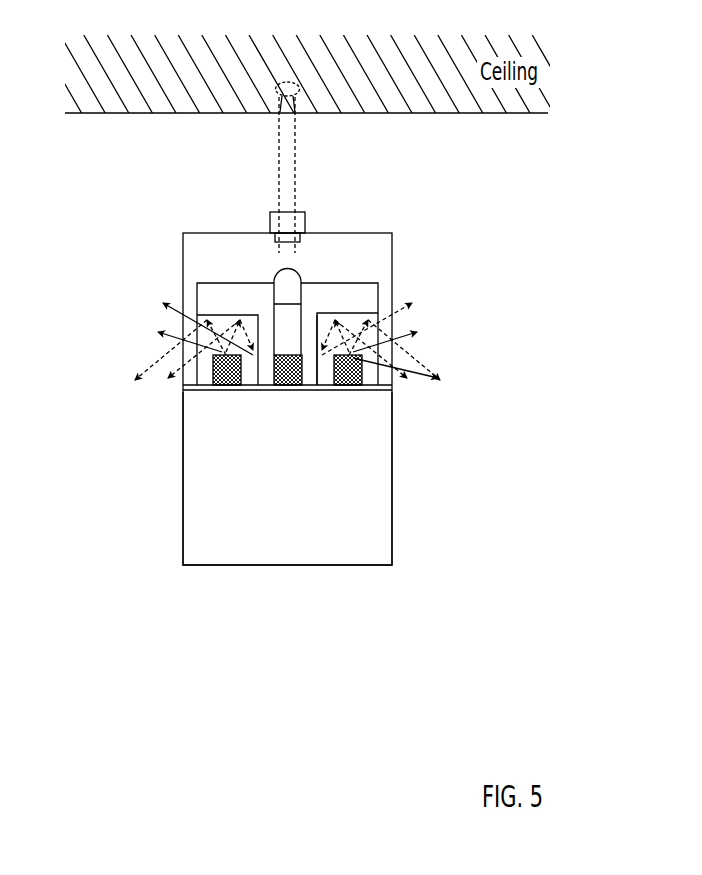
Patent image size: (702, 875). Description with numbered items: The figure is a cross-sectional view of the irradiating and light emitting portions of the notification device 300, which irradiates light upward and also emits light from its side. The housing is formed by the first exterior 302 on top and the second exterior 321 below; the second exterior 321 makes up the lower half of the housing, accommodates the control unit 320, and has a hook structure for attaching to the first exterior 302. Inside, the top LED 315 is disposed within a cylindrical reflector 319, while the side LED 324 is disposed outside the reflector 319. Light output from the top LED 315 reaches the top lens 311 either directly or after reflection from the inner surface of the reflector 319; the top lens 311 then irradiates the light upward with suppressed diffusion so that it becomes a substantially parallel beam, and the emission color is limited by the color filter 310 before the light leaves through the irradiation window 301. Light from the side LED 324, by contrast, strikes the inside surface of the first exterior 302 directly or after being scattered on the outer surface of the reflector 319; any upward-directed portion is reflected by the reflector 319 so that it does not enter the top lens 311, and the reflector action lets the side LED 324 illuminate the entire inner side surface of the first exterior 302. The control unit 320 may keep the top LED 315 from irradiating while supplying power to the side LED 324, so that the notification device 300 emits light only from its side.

The notification device 300 is at (296, 356).
The irradiation window 301 is at (287, 175).
The first exterior 302 is at (189, 248).
The color filter 310 is at (275, 243).
The top lens 311 is at (297, 280).
The reflector 319 is at (378, 288).
The control unit 320 is at (325, 392).
The top LED 315 is at (285, 392).
The side LED 324 is at (220, 392).
The second exterior 321 is at (184, 445).